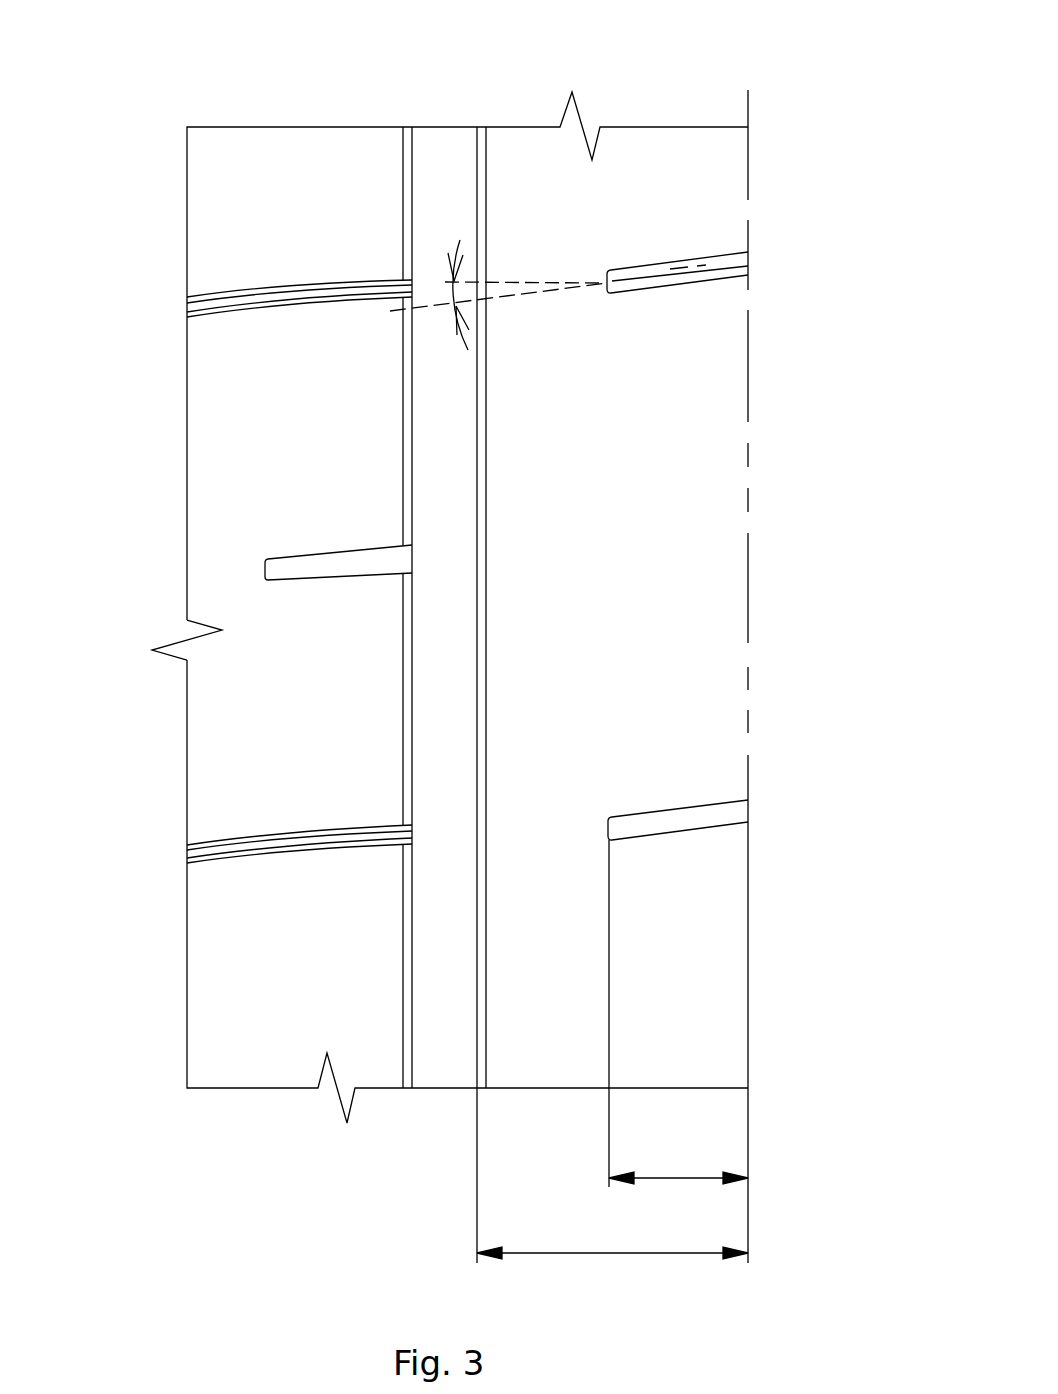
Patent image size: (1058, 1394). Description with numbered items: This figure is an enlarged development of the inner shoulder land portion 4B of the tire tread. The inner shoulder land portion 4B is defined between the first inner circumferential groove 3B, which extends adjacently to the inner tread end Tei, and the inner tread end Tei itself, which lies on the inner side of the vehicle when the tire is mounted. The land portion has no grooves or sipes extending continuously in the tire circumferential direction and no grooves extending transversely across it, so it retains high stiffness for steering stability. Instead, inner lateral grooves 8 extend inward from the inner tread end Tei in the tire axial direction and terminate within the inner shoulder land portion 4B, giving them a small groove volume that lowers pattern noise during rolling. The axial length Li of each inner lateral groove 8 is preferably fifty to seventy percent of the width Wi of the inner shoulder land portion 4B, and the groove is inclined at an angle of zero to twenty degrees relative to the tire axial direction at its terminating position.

The first inner circumferential groove 3B is at (442, 173).
The inner shoulder land portion 4B is at (533, 170).
The inner tread end Tei is at (748, 180).
The inner lateral groove 8 is at (670, 277).
The length of the inner lateral groove Li is at (678, 1013).
The width of the inner shoulder land portion Wi is at (612, 1175).